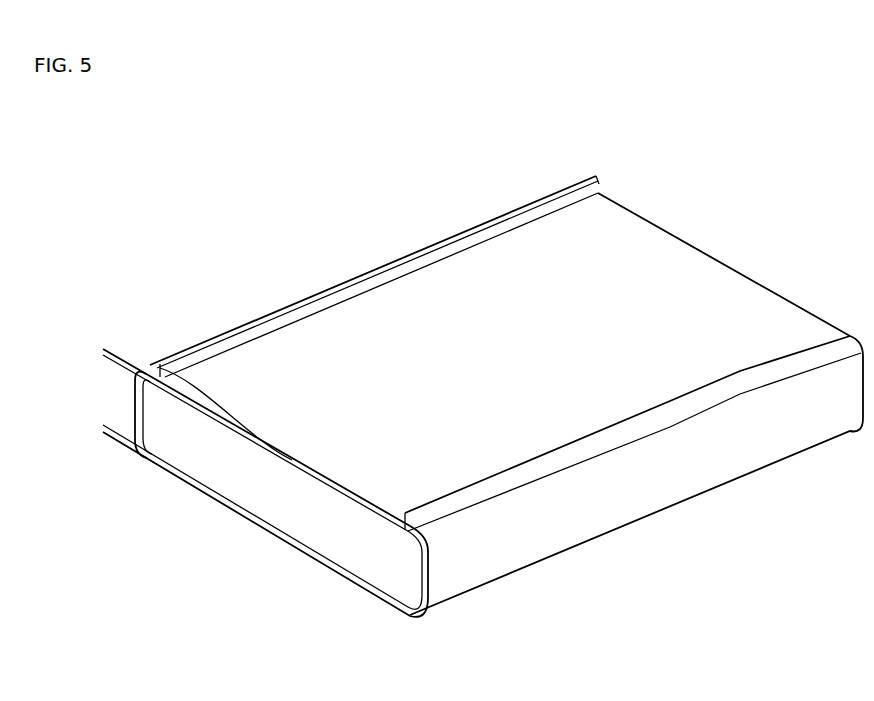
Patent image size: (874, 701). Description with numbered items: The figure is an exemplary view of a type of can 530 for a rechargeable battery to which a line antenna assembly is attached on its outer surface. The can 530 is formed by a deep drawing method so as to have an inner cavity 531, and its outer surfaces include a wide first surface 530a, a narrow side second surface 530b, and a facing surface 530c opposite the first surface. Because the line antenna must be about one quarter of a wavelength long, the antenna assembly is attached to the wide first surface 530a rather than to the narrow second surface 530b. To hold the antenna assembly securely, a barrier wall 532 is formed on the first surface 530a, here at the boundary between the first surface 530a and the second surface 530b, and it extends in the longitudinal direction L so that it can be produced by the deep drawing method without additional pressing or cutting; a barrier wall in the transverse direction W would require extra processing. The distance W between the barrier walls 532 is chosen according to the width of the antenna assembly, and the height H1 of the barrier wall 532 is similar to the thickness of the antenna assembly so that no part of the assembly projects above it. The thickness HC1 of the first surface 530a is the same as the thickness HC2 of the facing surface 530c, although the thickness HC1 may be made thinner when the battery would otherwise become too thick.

The can 530 is at (483, 400).
The first surface 530a is at (400, 300).
The second surface 530b is at (518, 553).
The facing surface 530c is at (314, 560).
The inner cavity 531 is at (268, 508).
The barrier wall 532 is at (296, 303).
The thickness of the first surface HC1 is at (109, 320).
The thickness of the facing surface HC2 is at (108, 405).
The height of the barrier wall H1 is at (205, 366).
The transverse direction W is at (845, 333).
The longitudinal direction L is at (850, 336).